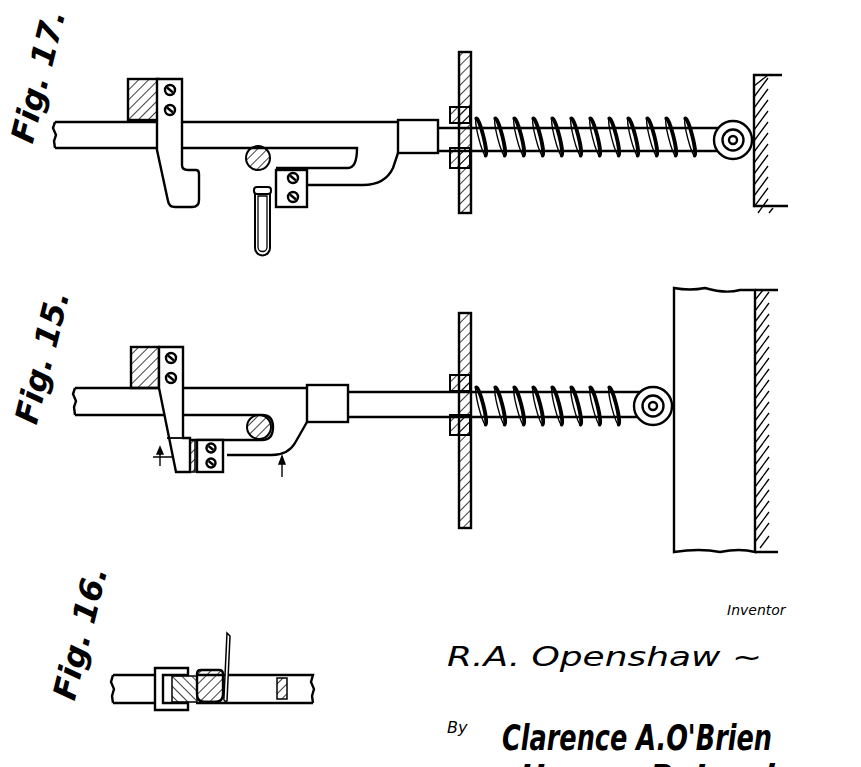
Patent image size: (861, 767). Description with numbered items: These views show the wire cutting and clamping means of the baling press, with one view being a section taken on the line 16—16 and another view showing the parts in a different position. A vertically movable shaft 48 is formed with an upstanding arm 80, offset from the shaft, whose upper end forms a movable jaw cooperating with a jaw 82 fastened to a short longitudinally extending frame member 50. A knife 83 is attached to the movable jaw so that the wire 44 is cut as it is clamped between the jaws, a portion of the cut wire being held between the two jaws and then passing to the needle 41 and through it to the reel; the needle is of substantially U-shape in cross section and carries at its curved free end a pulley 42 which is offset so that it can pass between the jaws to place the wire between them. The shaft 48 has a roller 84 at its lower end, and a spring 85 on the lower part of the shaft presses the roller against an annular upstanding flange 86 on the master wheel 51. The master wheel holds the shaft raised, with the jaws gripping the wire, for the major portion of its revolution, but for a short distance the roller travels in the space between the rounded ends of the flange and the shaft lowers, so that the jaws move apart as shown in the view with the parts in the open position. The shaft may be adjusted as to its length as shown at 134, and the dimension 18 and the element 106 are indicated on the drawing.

In FIG. 15, the section line 16 is at (152, 449).
In FIG. 15, the offset dimension 18 is at (293, 462).
In FIG. 17, the needle 41 is at (254, 243).
In FIG. 17, the pulley 42 is at (256, 191).
In FIG. 16, the wire 44 is at (226, 636).
In FIG. 17, the shaft 48 is at (340, 132).
In FIG. 15, the shaft 48 is at (381, 410).
In FIG. 16, the shaft 48 is at (129, 687).
In FIG. 17, the longitudinally extending member 50 is at (128, 84).
In FIG. 15, the longitudinally extending member 50 is at (131, 351).
In FIG. 17, the master wheel 51 is at (754, 98).
In FIG. 15, the master wheel 51 is at (752, 358).
In FIG. 17, the upstanding arm 80 is at (330, 186).
In FIG. 15, the upstanding arm 80 is at (292, 440).
In FIG. 16, the upstanding arm 80 is at (243, 703).
In FIG. 17, the jaw 82 is at (174, 190).
In FIG. 15, the jaw 82 is at (176, 473).
In FIG. 16, the jaw 82 is at (184, 682).
In FIG. 17, the knife 83 is at (294, 203).
In FIG. 15, the knife 83 is at (208, 473).
In FIG. 16, the knife 83 is at (210, 676).
In FIG. 17, the roller 84 is at (732, 120).
In FIG. 15, the roller 84 is at (652, 388).
In FIG. 16, the roller 84 is at (210, 704).
In FIG. 17, the spring 85 is at (663, 118).
In FIG. 15, the spring 85 is at (592, 387).
In FIG. 15, the annular upstanding flange 86 is at (675, 332).
In FIG. 17, the disc 106 is at (257, 146).
In FIG. 15, the disc 106 is at (258, 415).
In FIG. 17, the length adjustment 134 is at (414, 124).
In FIG. 15, the length adjustment 134 is at (336, 396).